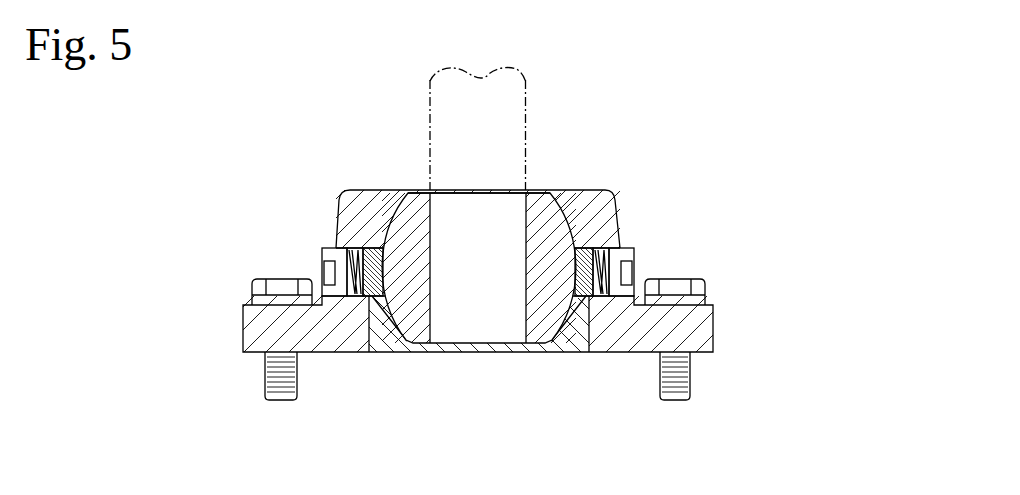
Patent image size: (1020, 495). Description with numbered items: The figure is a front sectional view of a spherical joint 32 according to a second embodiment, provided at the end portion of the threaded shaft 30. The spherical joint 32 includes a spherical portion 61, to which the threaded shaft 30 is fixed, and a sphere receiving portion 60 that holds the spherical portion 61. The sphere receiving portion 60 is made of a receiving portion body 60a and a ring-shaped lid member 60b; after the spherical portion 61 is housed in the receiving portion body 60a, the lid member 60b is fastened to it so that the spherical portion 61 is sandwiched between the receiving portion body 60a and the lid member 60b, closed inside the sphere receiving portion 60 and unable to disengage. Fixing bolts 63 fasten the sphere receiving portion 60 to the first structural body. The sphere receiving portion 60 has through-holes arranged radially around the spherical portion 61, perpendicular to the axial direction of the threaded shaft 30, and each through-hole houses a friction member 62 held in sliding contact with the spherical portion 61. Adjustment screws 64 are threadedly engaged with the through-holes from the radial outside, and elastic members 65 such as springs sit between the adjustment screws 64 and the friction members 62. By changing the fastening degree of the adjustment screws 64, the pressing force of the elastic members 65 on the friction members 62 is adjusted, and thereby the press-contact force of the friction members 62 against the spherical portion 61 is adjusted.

The threaded shaft 30 is at (526, 101).
The spherical joint 32 is at (713, 207).
The sphere receiving portion 60 is at (478, 377).
The receiving portion body 60a is at (627, 352).
The lid member 60b is at (479, 362).
The spherical portion 61 is at (402, 240).
The friction member 62 is at (352, 247).
The fixing bolt 63 is at (275, 283).
The adjustment screw 64 is at (322, 248).
The elastic member 65 is at (358, 297).